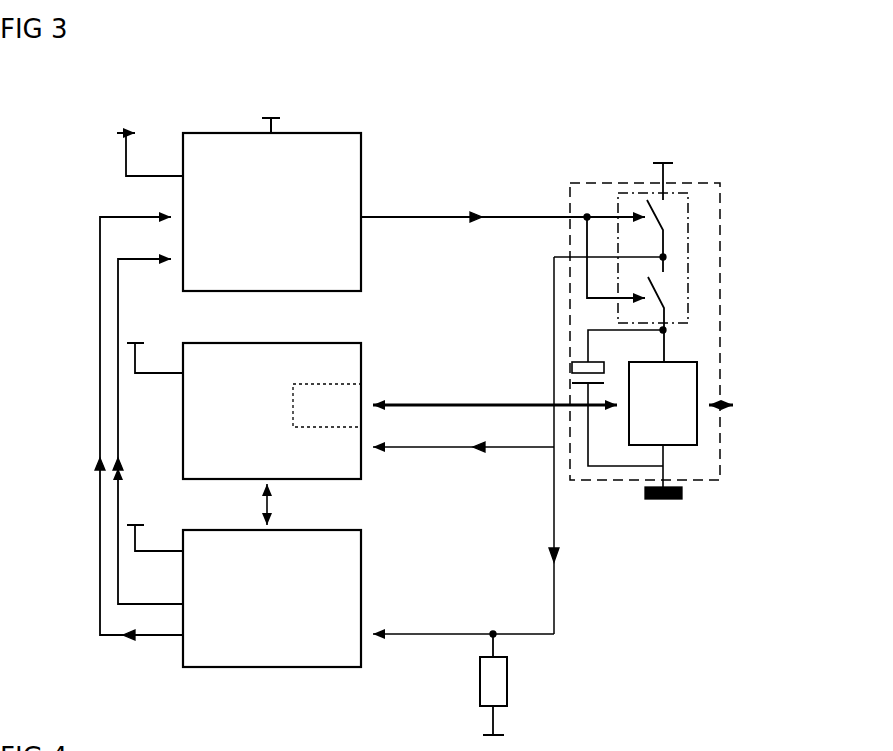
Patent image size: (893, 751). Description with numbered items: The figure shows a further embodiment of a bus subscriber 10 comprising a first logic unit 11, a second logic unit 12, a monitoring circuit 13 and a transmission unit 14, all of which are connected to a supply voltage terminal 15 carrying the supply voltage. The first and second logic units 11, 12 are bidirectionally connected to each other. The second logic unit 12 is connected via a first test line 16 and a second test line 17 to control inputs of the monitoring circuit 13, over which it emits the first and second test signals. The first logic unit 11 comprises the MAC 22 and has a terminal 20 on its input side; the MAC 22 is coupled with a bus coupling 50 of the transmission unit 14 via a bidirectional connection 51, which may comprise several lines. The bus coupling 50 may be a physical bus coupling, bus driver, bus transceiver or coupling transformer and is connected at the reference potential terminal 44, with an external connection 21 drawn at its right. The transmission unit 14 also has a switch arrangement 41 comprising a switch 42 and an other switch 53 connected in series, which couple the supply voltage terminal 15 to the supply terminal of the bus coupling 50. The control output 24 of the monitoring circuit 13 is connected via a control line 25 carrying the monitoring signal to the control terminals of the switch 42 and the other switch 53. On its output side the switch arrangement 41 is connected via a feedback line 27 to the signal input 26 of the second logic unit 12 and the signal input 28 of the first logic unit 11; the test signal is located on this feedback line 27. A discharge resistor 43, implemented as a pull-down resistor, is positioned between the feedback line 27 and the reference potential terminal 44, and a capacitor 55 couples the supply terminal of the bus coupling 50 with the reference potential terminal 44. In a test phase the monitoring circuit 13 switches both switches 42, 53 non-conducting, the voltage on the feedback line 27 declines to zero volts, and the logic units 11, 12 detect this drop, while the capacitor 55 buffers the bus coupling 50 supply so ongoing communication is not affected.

The bus subscriber 10 is at (735, 70).
The first logic unit 11 is at (243, 343).
The second logic unit 12 is at (233, 530).
The monitoring circuit 13 is at (368, 150).
The transmission unit 14 is at (585, 183).
The supply voltage terminal 15 is at (122, 140).
The first test line 16 is at (118, 637).
The second test line 17 is at (146, 604).
The terminal 20 is at (365, 400).
The external connection 21 is at (733, 410).
The MAC 22 is at (328, 382).
The control output 24 is at (365, 218).
The control line 25 is at (370, 222).
The signal input 26 is at (363, 642).
The feedback line 27 is at (555, 372).
The signal input 28 is at (365, 452).
The switch arrangement 41 is at (690, 216).
The switch 42 is at (655, 232).
The discharge resistor 43 is at (507, 680).
The reference potential terminal 44 is at (672, 500).
The bus coupling 50 is at (700, 373).
The bidirectional connection 51 is at (478, 395).
The other switch 53 is at (668, 292).
The capacitor 55 is at (592, 364).